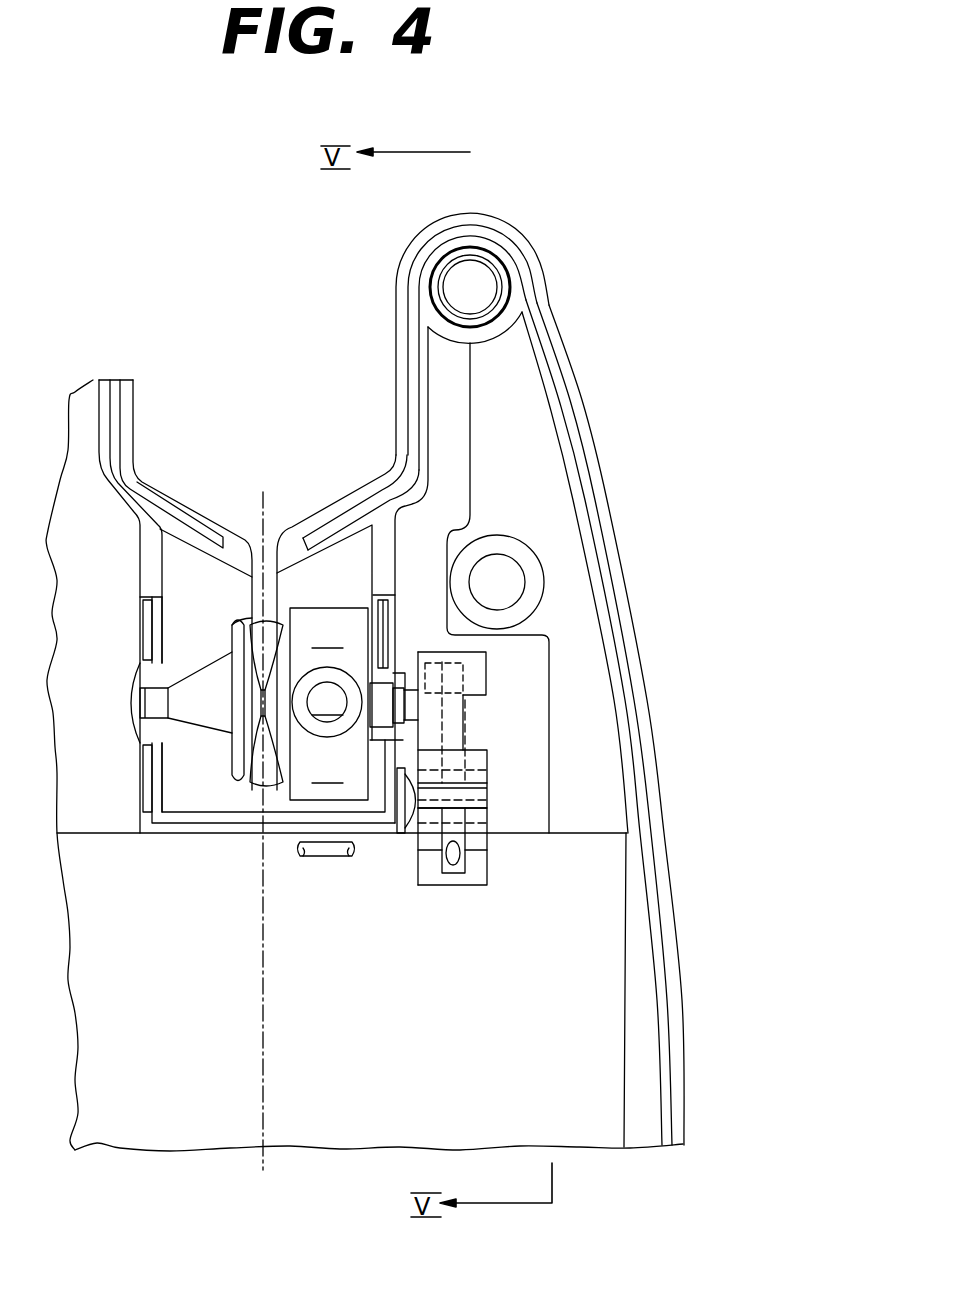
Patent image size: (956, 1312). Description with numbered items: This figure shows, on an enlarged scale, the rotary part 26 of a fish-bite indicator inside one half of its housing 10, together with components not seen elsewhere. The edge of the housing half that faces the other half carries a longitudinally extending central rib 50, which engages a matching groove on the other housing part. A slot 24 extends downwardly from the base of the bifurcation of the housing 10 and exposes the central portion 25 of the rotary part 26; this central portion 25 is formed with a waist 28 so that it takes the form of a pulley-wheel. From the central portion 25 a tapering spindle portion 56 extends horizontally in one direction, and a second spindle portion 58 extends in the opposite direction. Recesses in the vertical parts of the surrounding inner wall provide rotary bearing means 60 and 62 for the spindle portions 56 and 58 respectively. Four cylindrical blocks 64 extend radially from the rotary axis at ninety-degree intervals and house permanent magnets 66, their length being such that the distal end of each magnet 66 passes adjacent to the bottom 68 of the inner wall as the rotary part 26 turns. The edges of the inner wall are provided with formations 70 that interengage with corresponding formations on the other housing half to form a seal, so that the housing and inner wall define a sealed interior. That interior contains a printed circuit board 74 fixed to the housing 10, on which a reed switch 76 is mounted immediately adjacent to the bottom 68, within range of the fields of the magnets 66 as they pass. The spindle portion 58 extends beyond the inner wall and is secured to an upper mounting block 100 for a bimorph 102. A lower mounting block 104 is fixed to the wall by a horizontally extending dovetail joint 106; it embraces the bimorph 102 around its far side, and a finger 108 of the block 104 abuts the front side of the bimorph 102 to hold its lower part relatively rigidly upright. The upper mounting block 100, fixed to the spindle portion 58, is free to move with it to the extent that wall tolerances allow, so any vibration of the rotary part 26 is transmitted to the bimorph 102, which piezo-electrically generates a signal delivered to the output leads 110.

The housing 10 is at (645, 690).
The slot 24 is at (272, 596).
The central portion 25 is at (237, 788).
The rotary part 26 is at (244, 626).
The waist 28 is at (261, 832).
The central rib 50 is at (660, 857).
The tapering spindle portion 56 is at (203, 708).
The second spindle portion 58 is at (380, 606).
The rotary bearing means 60 is at (145, 725).
The rotary bearing means 62 is at (393, 658).
The cylindrical block 64 is at (329, 704).
The permanent magnet 66 is at (308, 694).
The bottom of the inner wall 68 is at (212, 828).
The formations 70 is at (152, 788).
The printed circuit board 74 is at (592, 1014).
The reed switch 76 is at (316, 862).
The upper mounting block 100 is at (477, 677).
The bimorph 102 is at (453, 750).
The lower mounting block 104 is at (483, 818).
The dovetail joint 106 is at (415, 810).
The finger 108 is at (467, 798).
The output leads 110 is at (453, 867).